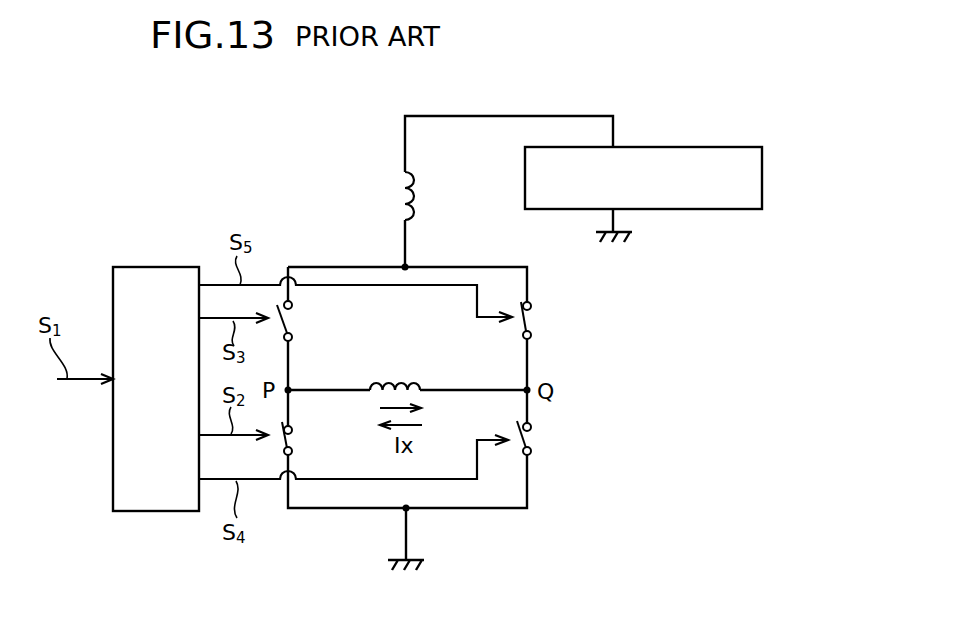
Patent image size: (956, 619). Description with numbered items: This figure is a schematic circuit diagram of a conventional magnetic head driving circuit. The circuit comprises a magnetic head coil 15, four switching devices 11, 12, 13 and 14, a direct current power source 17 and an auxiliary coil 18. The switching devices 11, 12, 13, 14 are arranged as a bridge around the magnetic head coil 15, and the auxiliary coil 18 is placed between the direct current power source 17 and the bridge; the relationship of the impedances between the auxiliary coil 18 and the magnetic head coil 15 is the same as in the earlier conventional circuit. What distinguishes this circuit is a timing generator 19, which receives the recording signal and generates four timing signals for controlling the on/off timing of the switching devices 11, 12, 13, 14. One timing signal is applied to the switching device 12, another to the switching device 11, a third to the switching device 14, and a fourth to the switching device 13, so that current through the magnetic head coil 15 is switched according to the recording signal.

The switching device 11 is at (297, 322).
The switching device 12 is at (304, 440).
The switching device 13 is at (546, 322).
The switching device 14 is at (546, 440).
The magnetic head coil 15 is at (401, 376).
The direct current power source 17 is at (647, 147).
The auxiliary coil 18 is at (415, 204).
The timing generator 19 is at (125, 267).